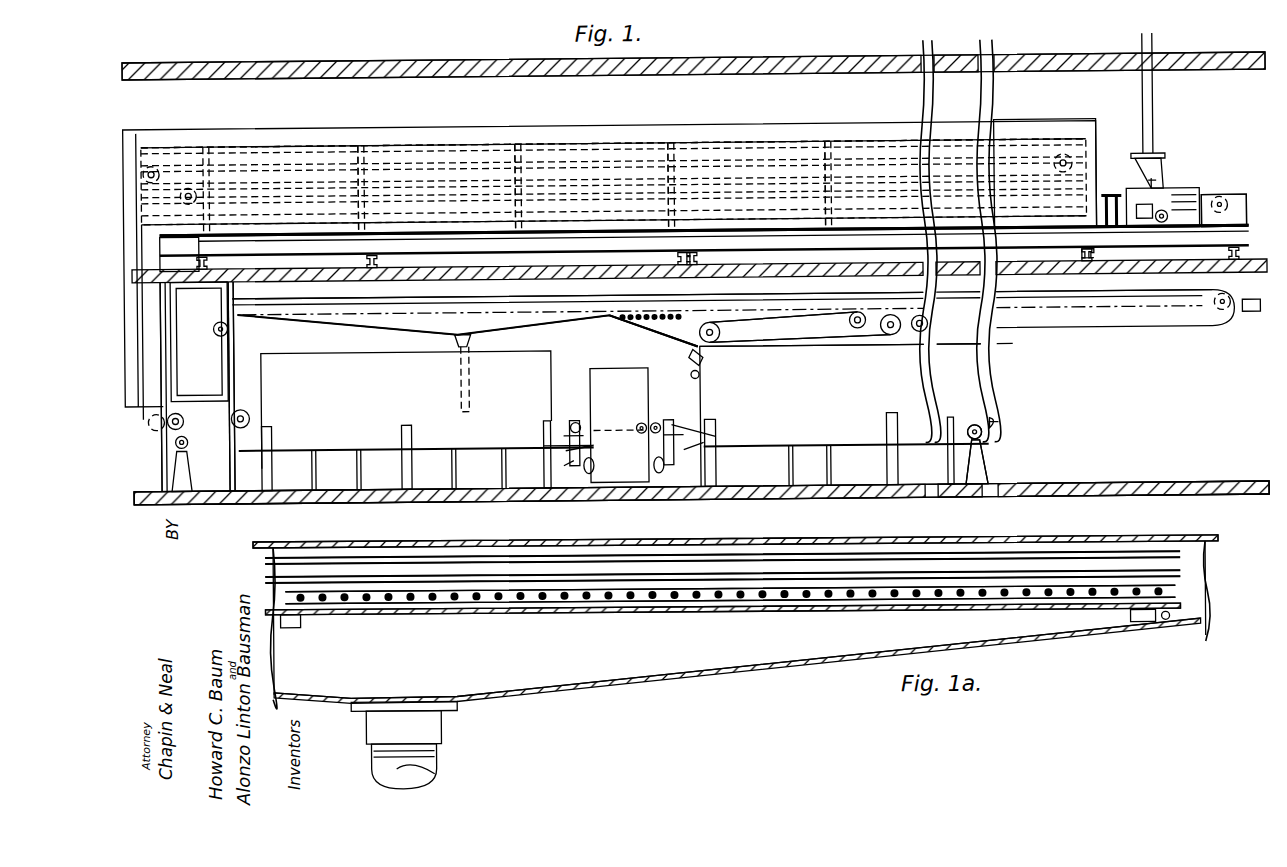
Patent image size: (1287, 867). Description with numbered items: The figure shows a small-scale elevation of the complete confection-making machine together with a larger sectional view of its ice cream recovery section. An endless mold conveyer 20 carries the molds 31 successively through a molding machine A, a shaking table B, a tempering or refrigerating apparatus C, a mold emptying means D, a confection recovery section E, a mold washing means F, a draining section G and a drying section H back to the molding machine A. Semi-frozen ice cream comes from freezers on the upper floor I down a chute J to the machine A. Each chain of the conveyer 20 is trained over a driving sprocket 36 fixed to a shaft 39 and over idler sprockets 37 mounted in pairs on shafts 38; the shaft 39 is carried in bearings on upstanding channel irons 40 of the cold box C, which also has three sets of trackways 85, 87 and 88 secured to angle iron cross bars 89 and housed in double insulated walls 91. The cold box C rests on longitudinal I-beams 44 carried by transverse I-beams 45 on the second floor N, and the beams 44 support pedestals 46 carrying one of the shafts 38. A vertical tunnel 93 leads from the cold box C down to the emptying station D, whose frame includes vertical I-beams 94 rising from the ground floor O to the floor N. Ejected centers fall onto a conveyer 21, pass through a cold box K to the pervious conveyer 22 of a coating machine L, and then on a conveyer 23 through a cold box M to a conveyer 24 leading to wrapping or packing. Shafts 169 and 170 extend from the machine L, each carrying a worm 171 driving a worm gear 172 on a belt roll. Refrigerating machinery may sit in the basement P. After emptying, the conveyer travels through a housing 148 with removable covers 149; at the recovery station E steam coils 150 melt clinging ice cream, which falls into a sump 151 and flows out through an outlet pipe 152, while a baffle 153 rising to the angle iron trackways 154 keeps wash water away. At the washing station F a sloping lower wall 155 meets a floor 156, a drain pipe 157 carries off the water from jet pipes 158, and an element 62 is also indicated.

In FIG. 1, the endless mold conveyer 20 is at (178, 175).
In FIG. 1A, the endless mold conveyer 20 is at (840, 608).
In FIG. 1, the conveyer 21 is at (568, 428).
In FIG. 1, the pervious conveyer 22 is at (612, 434).
In FIG. 1, the conveyer 23 is at (688, 434).
In FIG. 1, the conveyer 24 is at (996, 426).
In FIG. 1A, the molds 31 is at (416, 612).
In FIG. 1, the driving sprocket 36 is at (1072, 170).
In FIG. 1, the idler sprockets 37 is at (1232, 222).
In FIG. 1, the shafts 38 is at (1230, 205).
In FIG. 1, the shaft 39 is at (1140, 170).
In FIG. 1, the upstanding channel irons 40 is at (576, 227).
In FIG. 1, the longitudinal I-beams 44 is at (704, 240).
In FIG. 1, the transverse I-beams 45 is at (1122, 252).
In FIG. 1, the pedestals 46 is at (1238, 212).
In FIG. 1, the discharge outlet 62 is at (1255, 322).
In FIG. 1, the trackways 85 is at (650, 180).
In FIG. 1, the trackways 87 is at (497, 180).
In FIG. 1, the trackways 88 is at (340, 180).
In FIG. 1, the angle iron cross bars 89 is at (812, 160).
In FIG. 1, the double walls 91 is at (760, 146).
In FIG. 1, the vertical tunnel 93 is at (160, 360).
In FIG. 1, the vertical I-beams 94 is at (222, 478).
In FIG. 1, the housing 148 is at (488, 306).
In FIG. 1A, the housing 148 is at (752, 656).
In FIG. 1, the removable top wall sections 149 is at (345, 306).
In FIG. 1A, the removable top wall sections 149 is at (380, 560).
In FIG. 1A, the steam coils 150 is at (448, 572).
In FIG. 1A, the sump 151 is at (739, 618).
In FIG. 1, the outlet pipe 152 is at (470, 346).
In FIG. 1A, the outlet pipe 152 is at (420, 764).
In FIG. 1A, the baffle 153 is at (1146, 628).
In FIG. 1A, the angle iron trackways 154 is at (584, 612).
In FIG. 1, the lower wall 155 is at (640, 345).
In FIG. 1, the floor 156 is at (870, 356).
In FIG. 1, the drain pipe 157 is at (686, 362).
In FIG. 1, the transversely disposed pipes 158 is at (660, 316).
In FIG. 1, the shaft 169 is at (430, 450).
In FIG. 1, the shaft 170 is at (846, 440).
In FIG. 1, the worm 171 is at (170, 470).
In FIG. 1, the worm gear 172 is at (172, 448).
In FIG. 1, the molding machine A is at (1177, 186).
In FIG. 1, the shaking table B is at (1112, 196).
In FIG. 1, the tempering apparatus C is at (647, 111).
In FIG. 1, the mold emptying means D is at (197, 387).
In FIG. 1, the confection recovery section E is at (423, 306).
In FIG. 1A, the confection recovery section E is at (529, 537).
In FIG. 1, the mold washing means F is at (615, 308).
In FIG. 1, the draining section G is at (825, 306).
In FIG. 1, the drying section H is at (1048, 313).
In FIG. 1, the floor I is at (866, 63).
In FIG. 1, the chute J is at (1153, 94).
In FIG. 1, the cold box K is at (406, 410).
In FIG. 1, the coating machine L is at (619, 425).
In FIG. 1, the cold box M is at (841, 415).
In FIG. 1, the second floor N is at (1066, 296).
In FIG. 1, the ground floor O is at (828, 498).
In FIG. 1, the basement P is at (701, 505).